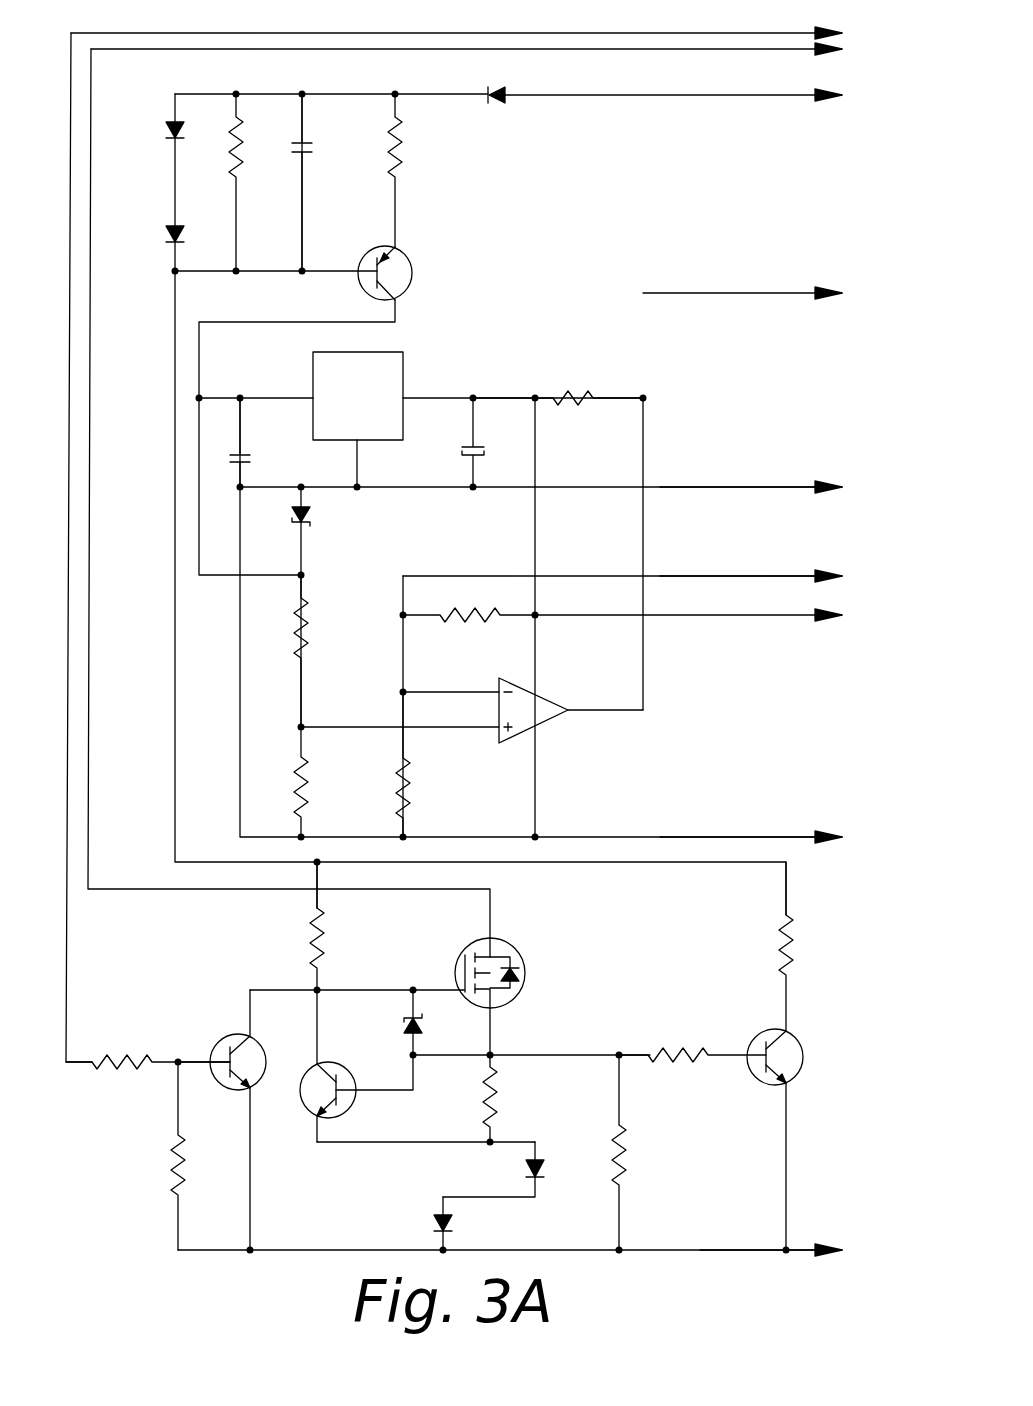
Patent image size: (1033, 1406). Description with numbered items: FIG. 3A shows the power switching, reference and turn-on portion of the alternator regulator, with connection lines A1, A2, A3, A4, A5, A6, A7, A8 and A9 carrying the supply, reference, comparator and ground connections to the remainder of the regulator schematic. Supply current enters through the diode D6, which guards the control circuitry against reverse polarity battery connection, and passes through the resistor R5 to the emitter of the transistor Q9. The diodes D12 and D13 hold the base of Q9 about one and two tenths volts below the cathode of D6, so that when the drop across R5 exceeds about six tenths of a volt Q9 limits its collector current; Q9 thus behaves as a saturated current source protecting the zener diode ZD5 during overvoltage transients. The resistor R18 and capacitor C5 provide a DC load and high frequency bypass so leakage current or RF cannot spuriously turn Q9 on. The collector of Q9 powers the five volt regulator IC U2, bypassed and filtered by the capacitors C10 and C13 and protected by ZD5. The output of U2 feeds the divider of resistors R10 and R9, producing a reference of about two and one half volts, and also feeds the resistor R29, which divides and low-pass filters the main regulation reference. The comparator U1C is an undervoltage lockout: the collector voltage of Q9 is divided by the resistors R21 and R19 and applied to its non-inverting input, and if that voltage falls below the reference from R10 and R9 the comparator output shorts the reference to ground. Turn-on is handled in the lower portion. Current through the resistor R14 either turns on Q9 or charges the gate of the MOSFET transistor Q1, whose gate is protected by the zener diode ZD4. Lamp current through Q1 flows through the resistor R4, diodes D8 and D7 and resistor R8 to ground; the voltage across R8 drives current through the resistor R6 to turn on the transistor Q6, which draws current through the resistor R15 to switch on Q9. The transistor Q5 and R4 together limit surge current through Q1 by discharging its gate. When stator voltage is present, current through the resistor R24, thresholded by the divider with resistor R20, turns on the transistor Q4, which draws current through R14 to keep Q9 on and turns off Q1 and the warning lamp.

The output line A1 is at (779, 32).
The output line A2 is at (766, 52).
The output line A3 is at (760, 97).
The output line A4 is at (790, 291).
The output line A5 is at (788, 486).
The output line A6 is at (785, 575).
The output line A7 is at (788, 615).
The output line A8 is at (792, 836).
The output line A9 is at (802, 1252).
The diode D12 is at (153, 146).
The diode D13 is at (153, 251).
The diode D6 is at (480, 86).
The diode D7 is at (423, 1223).
The diode D8 is at (513, 1160).
The zener diode ZD5 is at (327, 531).
The zener diode ZD4 is at (384, 1024).
The resistor R18 is at (240, 170).
The resistor R5 is at (417, 170).
The resistor R29 is at (558, 385).
The resistor R21 is at (323, 651).
The resistor R19 is at (327, 782).
The resistor R9 is at (422, 764).
The resistor R10 is at (469, 631).
The resistor R14 is at (293, 926).
The resistor R24 is at (148, 1049).
The resistor R20 is at (148, 1156).
The resistor R4 is at (509, 1098).
The resistor R8 is at (639, 1152).
The resistor R6 is at (692, 1041).
The resistor R15 is at (761, 946).
The capacitor C5 is at (316, 182).
The capacitor C10 is at (240, 430).
The capacitor C13 is at (475, 464).
The 5 volt voltage regulator IC U2 is at (368, 402).
The comparator U1C is at (528, 702).
The transistor Q9 is at (382, 275).
The transistor Q4 is at (222, 1120).
The transistor Q5 is at (338, 1069).
The transistor Q6 is at (782, 1115).
The MOSFET transistor Q1 is at (485, 970).